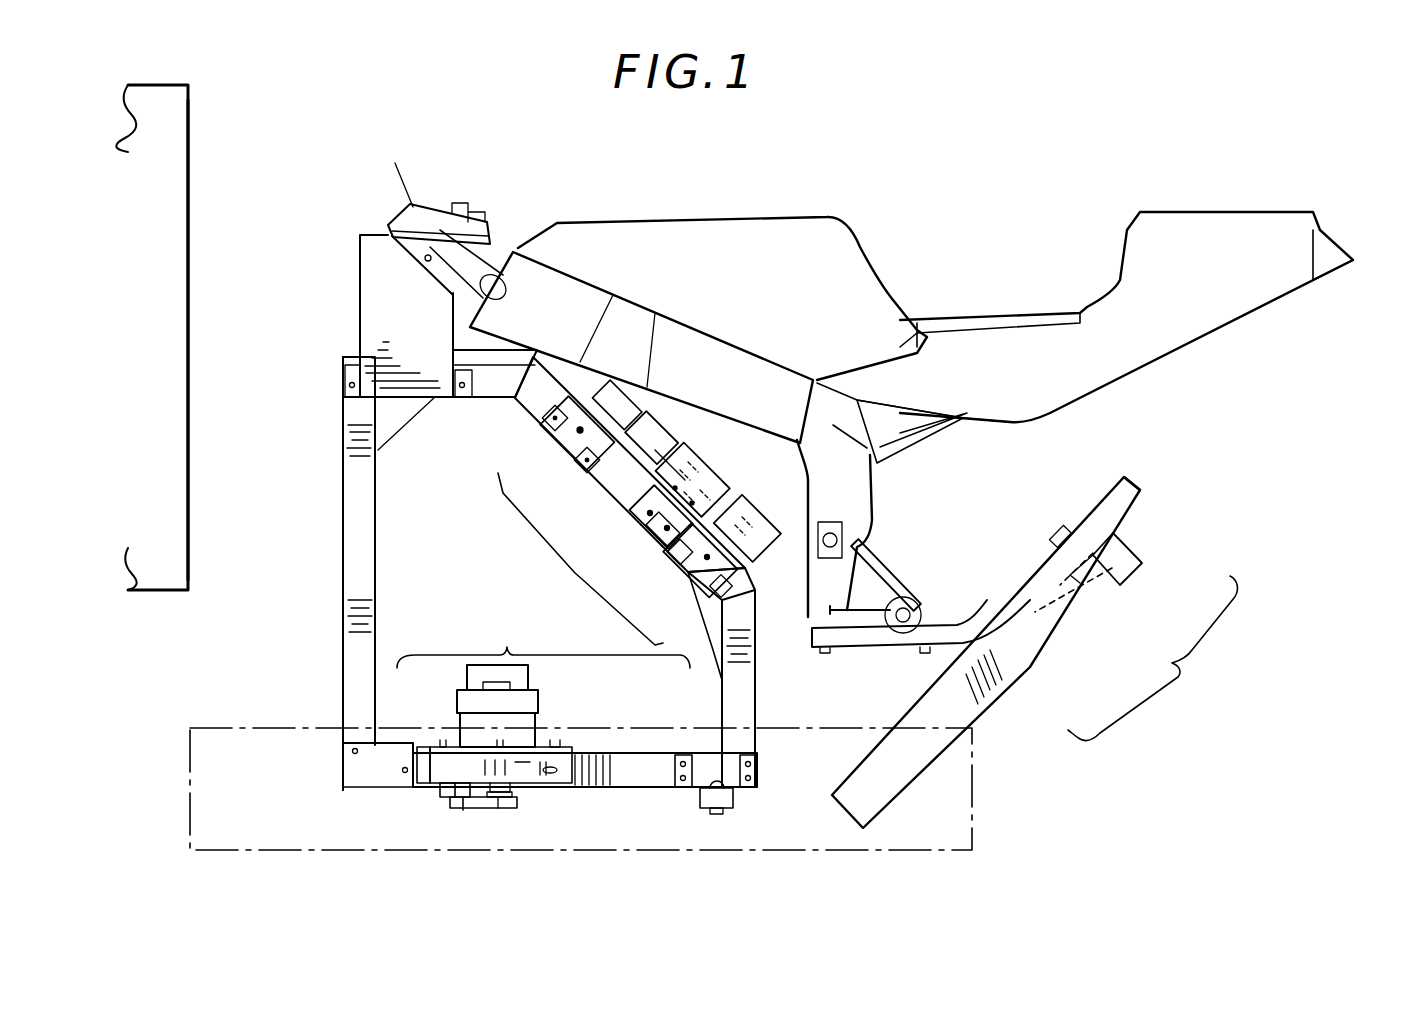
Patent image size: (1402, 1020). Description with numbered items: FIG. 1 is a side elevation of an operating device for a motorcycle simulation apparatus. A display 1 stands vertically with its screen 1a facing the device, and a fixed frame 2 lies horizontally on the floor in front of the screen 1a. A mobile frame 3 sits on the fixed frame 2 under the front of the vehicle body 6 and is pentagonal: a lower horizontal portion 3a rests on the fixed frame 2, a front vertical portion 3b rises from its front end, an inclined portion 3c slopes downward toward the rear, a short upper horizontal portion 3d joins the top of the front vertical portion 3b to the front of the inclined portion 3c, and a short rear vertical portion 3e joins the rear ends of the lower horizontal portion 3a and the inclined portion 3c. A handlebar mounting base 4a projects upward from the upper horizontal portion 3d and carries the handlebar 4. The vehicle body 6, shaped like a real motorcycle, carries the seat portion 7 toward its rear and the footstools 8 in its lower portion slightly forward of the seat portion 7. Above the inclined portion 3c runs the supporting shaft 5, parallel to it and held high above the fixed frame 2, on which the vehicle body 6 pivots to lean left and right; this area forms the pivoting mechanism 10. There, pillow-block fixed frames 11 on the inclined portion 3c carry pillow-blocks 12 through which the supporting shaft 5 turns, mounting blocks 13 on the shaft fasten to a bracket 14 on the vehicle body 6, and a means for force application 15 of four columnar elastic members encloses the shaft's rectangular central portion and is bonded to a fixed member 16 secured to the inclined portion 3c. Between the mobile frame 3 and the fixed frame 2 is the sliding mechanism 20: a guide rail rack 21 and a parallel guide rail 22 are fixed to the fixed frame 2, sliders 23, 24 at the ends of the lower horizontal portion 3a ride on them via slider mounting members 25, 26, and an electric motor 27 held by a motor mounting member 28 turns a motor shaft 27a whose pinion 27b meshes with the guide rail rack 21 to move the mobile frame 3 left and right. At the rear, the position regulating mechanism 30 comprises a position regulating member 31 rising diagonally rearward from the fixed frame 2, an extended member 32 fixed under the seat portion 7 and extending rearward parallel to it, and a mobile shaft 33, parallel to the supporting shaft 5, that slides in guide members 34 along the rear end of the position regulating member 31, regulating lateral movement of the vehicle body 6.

The display 1 is at (177, 118).
The screen 1a is at (190, 300).
The fixed frame 2 is at (220, 728).
The mobile frame 3 is at (345, 508).
The lower horizontal portion 3a is at (623, 782).
The front vertical portion 3b is at (370, 580).
The inclined portion 3c is at (507, 410).
The upper horizontal portion 3d is at (490, 397).
The rear vertical portion 3e is at (757, 676).
The handlebar 4 is at (437, 207).
The handlebar mounting base 4a is at (368, 257).
The supporting shaft 5 is at (660, 473).
The vehicle body 6 is at (803, 213).
The seat portion 7 is at (987, 317).
The footstools 8 is at (910, 612).
The pivoting mechanism 10 is at (580, 559).
The pillow-block fixed frame 11 is at (693, 553).
The pillow-block 12 is at (760, 530).
The mounting block 13 is at (737, 483).
The bracket 14 is at (797, 503).
The means for force application 15 is at (660, 520).
The fixed member 16 is at (660, 537).
The sliding mechanism 20 is at (543, 641).
The guide rail rack 21 is at (463, 810).
The guide rail 22 is at (713, 813).
The slider 23 is at (437, 797).
The slider 24 is at (697, 797).
The slider mounting member 25 is at (437, 778).
The slider mounting member 26 is at (733, 785).
The electric motor 27 is at (537, 702).
The motor shaft 27a is at (498, 808).
The pinion 27b is at (517, 802).
The motor mounting member 28 is at (452, 748).
The position regulating mechanism 30 is at (1152, 658).
The position regulating member 31 is at (1043, 650).
The extended member 32 is at (1127, 503).
The mobile shaft 33 is at (1120, 580).
The guide members 34 is at (1070, 587).